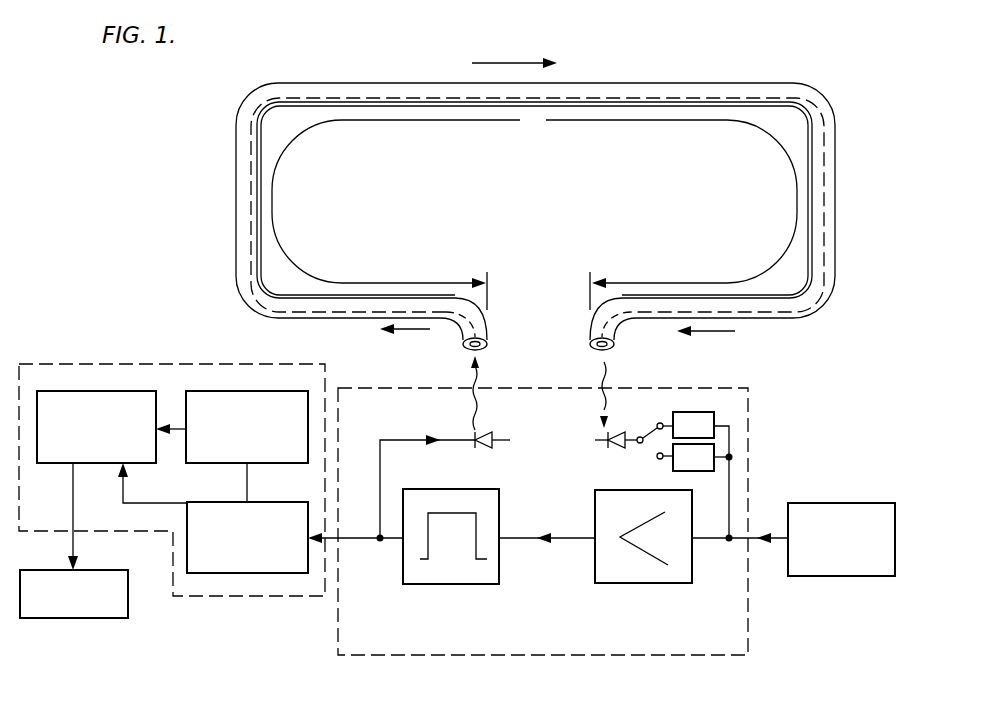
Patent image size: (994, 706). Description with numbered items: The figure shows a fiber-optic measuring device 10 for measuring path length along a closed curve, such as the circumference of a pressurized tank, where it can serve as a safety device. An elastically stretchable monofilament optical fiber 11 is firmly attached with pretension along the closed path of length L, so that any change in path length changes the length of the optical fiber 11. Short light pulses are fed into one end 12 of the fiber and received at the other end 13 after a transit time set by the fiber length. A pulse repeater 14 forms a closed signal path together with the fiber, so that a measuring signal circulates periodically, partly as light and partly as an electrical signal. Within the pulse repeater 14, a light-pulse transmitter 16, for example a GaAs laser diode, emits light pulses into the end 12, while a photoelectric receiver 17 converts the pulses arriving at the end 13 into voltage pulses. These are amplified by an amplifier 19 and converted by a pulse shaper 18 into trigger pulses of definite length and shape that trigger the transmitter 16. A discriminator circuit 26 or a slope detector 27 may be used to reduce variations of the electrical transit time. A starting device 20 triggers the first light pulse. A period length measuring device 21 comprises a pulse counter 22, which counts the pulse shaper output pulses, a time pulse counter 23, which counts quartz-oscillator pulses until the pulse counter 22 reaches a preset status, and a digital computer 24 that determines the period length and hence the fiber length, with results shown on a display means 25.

The fiber-optic measuring device 10 is at (539, 206).
The optical fiber 11 is at (660, 93).
The one end of optical fiber 12 is at (478, 328).
The other end of optical fiber 13 is at (597, 327).
The pulse repeater 14 is at (752, 640).
The light-pulse transmitter 16 is at (490, 440).
The photoelectric receiver 17 is at (608, 446).
The pulse shaper 18 is at (442, 584).
The amplifier 19 is at (630, 583).
The starting device 20 is at (866, 503).
The period length measuring device 21 is at (315, 367).
The pulse counter 22 is at (248, 573).
The time pulse counter 23 is at (260, 391).
The digital computer 24 is at (103, 391).
The display means 25 is at (88, 618).
The discriminator circuit 26 is at (700, 412).
The slope detector 27 is at (716, 455).